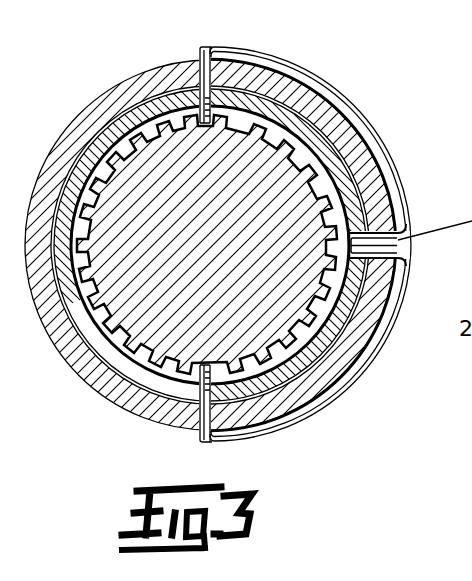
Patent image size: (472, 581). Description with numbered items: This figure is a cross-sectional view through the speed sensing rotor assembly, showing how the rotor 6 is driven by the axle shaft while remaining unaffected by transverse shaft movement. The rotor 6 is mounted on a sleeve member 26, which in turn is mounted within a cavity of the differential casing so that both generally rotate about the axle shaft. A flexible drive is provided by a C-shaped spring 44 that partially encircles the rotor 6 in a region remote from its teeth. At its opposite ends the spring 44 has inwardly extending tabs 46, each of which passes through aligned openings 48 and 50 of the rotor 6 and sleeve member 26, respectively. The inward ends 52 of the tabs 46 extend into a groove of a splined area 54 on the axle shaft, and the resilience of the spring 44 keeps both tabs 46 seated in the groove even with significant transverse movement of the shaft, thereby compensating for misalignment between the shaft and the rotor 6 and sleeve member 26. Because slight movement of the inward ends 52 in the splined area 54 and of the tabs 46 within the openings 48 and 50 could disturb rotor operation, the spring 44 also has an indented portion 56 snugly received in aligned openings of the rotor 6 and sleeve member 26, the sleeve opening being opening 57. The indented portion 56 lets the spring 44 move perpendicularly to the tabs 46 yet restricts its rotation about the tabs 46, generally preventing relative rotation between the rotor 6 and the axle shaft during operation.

The rotor 6 is at (359, 148).
The sleeve member 26 is at (130, 108).
The C-shaped spring 44 is at (348, 100).
The tabs 46 is at (203, 50).
The openings 48 is at (200, 71).
The openings 50 is at (243, 89).
The inward ends 52 is at (207, 123).
The splined area 54 is at (125, 143).
The indented portion 56 is at (398, 245).
The opening 57 is at (349, 230).